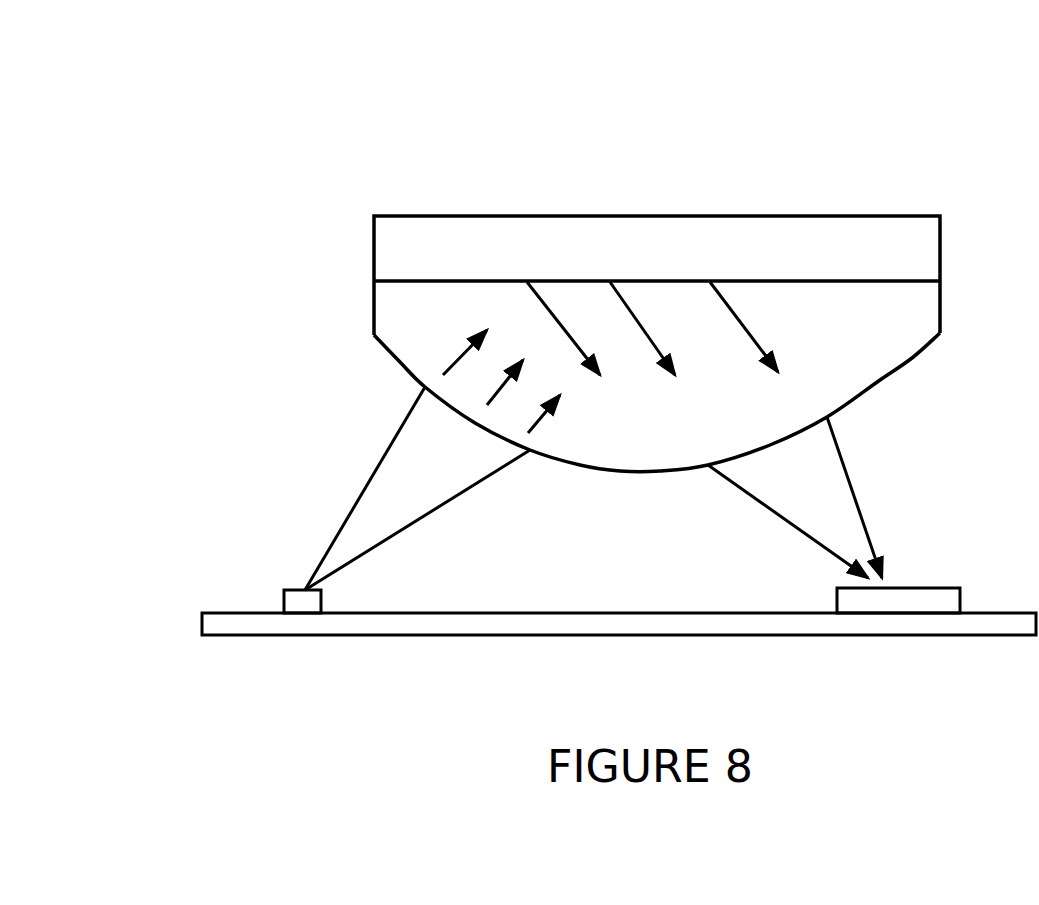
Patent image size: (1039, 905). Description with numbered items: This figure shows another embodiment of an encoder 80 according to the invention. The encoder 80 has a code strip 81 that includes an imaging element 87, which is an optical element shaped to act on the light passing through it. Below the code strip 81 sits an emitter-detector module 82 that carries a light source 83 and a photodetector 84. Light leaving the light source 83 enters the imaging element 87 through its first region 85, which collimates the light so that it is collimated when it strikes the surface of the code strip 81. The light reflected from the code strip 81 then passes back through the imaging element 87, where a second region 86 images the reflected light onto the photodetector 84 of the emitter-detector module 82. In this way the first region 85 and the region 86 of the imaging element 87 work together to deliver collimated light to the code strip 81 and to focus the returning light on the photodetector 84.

The encoder 80 is at (222, 147).
The code strip 81 is at (685, 216).
The emitter-detector module 82 is at (698, 634).
The light source 83 is at (308, 608).
The photodetector 84 is at (934, 595).
The first region 85 is at (384, 358).
The region 86 is at (850, 402).
The imaging element 87 is at (399, 296).